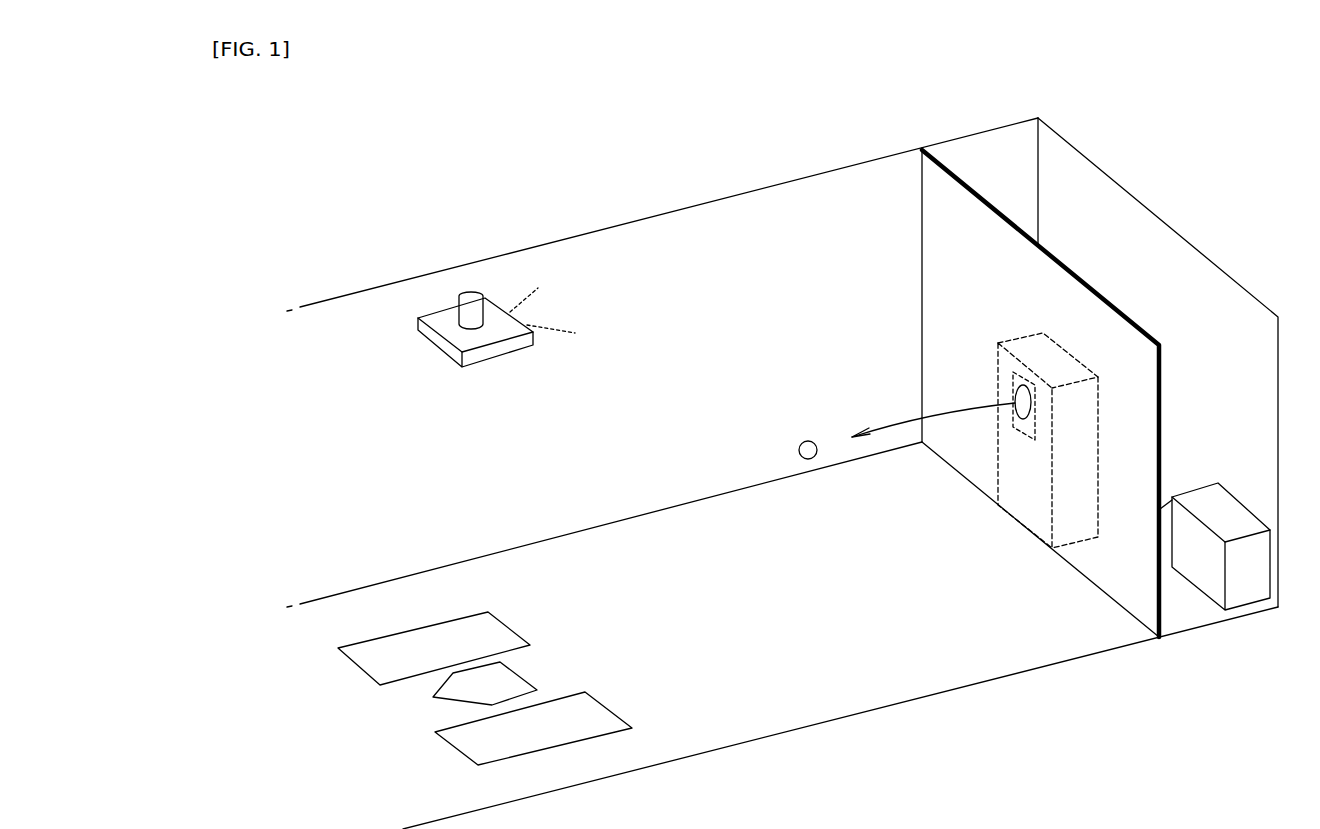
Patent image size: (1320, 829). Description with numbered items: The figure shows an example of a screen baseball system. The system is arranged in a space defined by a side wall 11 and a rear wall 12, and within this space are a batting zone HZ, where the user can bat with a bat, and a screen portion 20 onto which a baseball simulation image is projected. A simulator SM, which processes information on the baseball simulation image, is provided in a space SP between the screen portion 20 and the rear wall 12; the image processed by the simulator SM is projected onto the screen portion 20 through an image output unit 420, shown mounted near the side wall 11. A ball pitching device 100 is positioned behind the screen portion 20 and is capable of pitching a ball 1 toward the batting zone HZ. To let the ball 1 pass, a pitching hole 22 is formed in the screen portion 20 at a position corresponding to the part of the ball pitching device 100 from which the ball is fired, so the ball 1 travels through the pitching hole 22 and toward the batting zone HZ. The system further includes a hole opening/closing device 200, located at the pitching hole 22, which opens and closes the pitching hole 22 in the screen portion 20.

The ball 1 is at (803, 439).
The side wall 11 is at (677, 208).
The rear wall 12 is at (1173, 227).
The screen portion 20 is at (1007, 217).
The pitching hole 22 is at (1017, 392).
The ball pitching device 100 is at (998, 466).
The hole opening/closing device 200 is at (1012, 418).
The image output unit 420 is at (490, 353).
The space SP is at (1182, 373).
The simulator SM is at (1242, 585).
The batting zone HZ is at (371, 694).